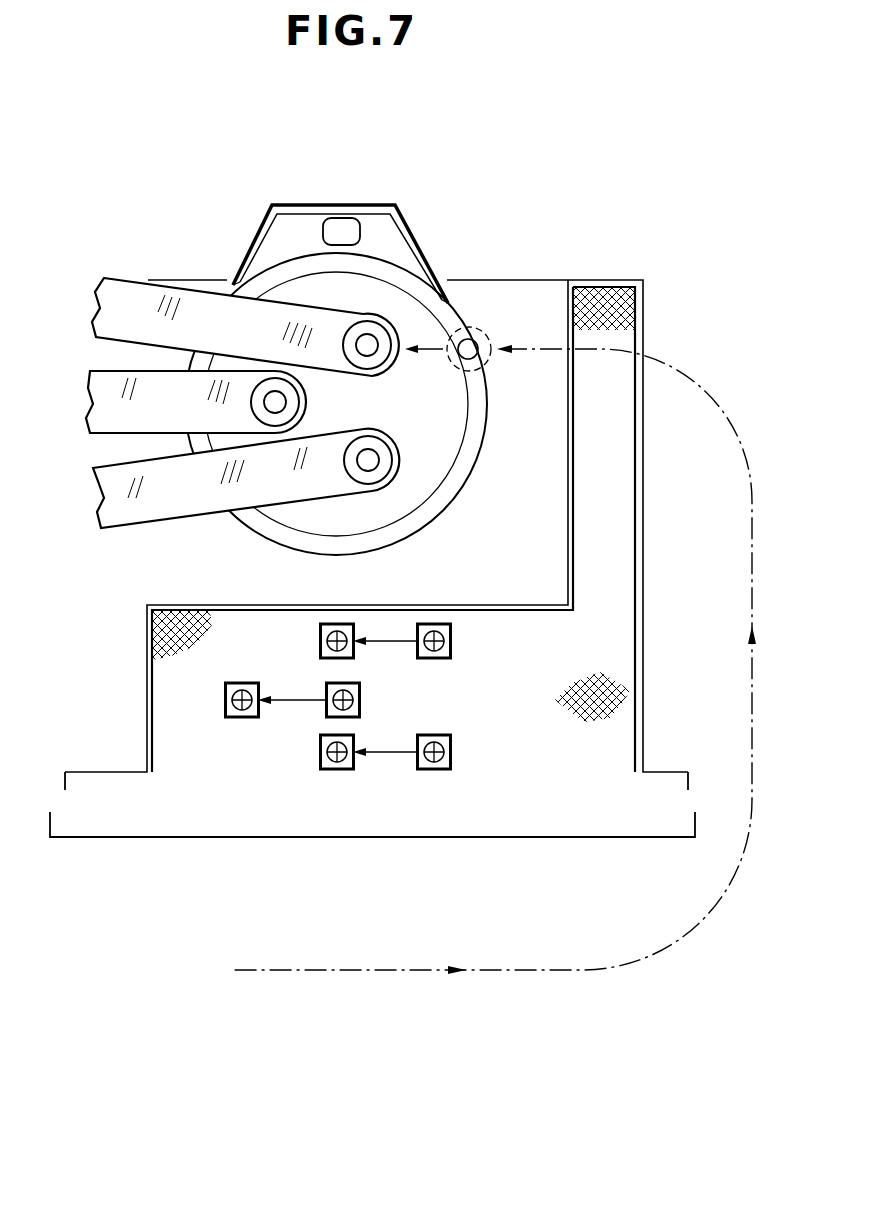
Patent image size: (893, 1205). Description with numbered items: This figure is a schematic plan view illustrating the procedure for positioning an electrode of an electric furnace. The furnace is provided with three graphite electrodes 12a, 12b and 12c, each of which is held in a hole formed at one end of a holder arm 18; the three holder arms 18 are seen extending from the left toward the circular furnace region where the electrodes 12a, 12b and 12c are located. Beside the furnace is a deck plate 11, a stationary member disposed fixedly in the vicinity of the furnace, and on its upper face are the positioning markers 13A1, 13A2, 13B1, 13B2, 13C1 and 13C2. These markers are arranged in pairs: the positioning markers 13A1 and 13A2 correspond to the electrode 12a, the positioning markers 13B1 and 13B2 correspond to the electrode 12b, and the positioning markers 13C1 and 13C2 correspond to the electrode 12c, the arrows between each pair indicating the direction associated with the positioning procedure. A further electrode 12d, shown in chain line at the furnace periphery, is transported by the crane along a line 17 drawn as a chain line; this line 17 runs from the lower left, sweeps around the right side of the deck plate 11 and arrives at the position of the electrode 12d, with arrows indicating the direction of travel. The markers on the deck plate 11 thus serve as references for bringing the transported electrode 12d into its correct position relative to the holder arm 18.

The deck plate 11 is at (380, 806).
The electrode 12a is at (378, 348).
The electrode 12b is at (283, 414).
The electrode 12c is at (372, 472).
The electrode 12d is at (488, 332).
The positioning marker 13A1 is at (452, 652).
The positioning marker 13A2 is at (320, 630).
The positioning marker 13B1 is at (361, 708).
The positioning marker 13B2 is at (228, 718).
The positioning marker 13C1 is at (446, 770).
The positioning marker 13C2 is at (320, 768).
The line 17 is at (397, 972).
The holder arm 18 is at (136, 300).